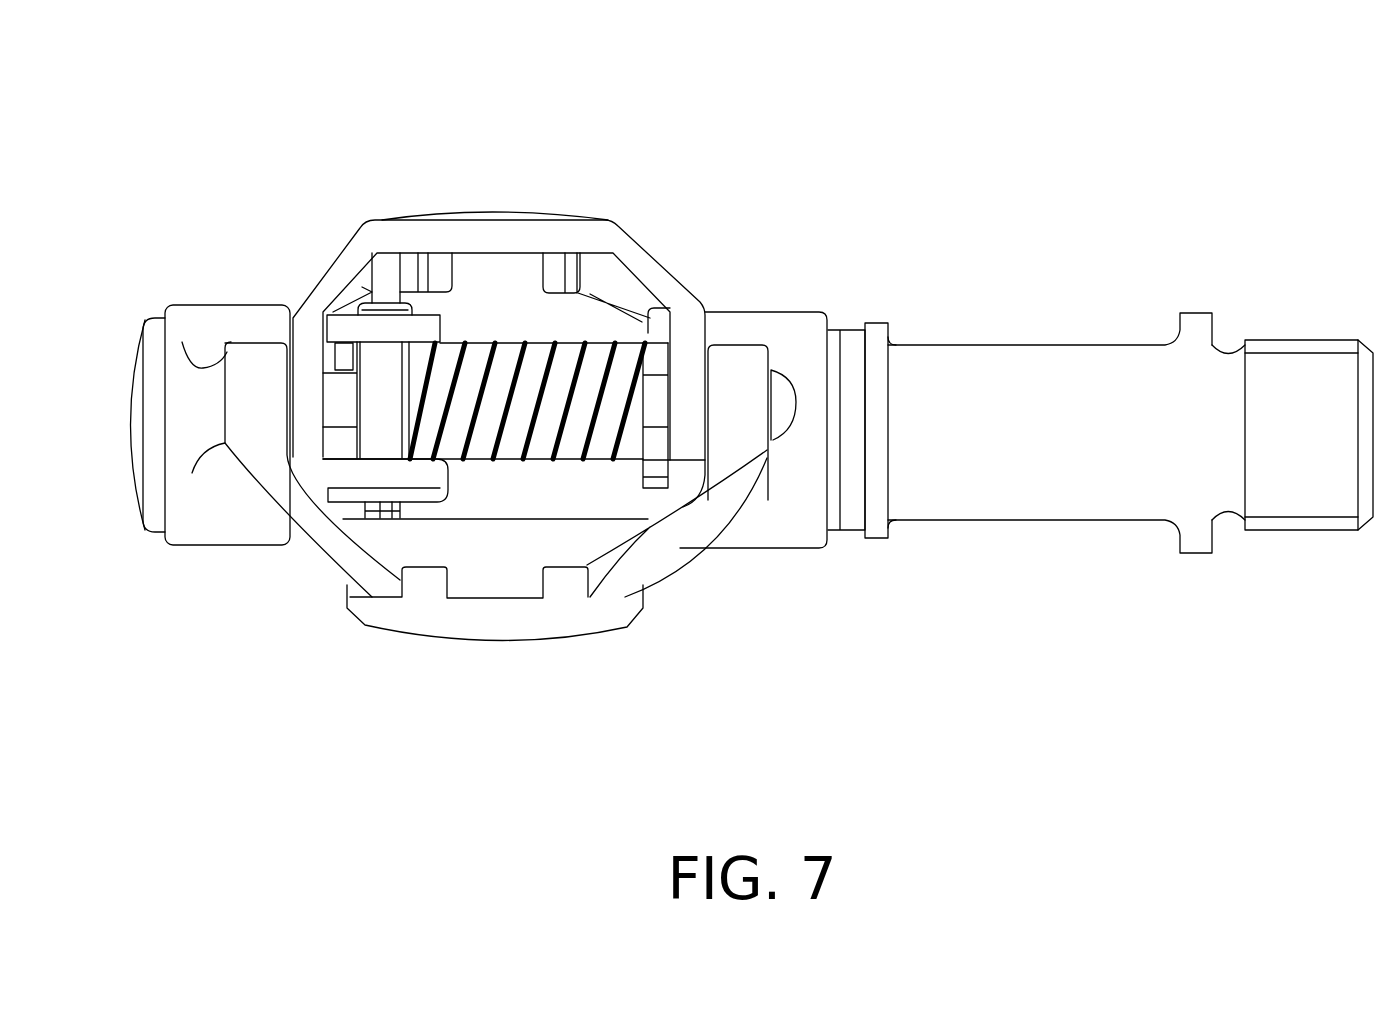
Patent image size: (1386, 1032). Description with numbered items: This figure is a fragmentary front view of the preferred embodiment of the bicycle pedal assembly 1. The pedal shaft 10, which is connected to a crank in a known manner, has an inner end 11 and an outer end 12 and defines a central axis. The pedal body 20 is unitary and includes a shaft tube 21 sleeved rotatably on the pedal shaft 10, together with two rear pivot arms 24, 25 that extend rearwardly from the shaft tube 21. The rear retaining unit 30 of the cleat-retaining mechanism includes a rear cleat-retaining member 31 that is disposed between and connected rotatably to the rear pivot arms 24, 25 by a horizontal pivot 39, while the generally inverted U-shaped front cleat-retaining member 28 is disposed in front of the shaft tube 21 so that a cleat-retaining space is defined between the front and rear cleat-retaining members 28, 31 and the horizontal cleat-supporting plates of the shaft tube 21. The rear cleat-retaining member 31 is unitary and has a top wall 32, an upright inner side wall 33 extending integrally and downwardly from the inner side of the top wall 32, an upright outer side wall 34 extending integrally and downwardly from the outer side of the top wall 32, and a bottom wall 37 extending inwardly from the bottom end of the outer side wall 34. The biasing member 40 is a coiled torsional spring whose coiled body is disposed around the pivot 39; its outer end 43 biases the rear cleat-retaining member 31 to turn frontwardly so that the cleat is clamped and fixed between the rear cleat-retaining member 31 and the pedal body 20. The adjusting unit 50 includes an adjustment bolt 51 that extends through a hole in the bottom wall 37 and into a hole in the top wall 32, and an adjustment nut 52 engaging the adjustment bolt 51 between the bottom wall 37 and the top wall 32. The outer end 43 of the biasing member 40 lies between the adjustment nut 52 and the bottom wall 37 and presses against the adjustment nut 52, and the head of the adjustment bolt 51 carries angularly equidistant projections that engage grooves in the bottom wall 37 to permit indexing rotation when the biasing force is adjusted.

The bicycle pedal assembly 1 is at (1318, 337).
The pedal shaft 10 is at (1113, 365).
The inner end 11 is at (1298, 520).
The outer end 12 is at (1060, 515).
The pedal body 20 is at (800, 312).
The shaft tube 21 is at (819, 550).
The rear pivot arm 24 is at (748, 357).
The rear pivot arm 25 is at (237, 410).
The front cleat-retaining member 28 is at (440, 277).
The rear retaining unit 30 is at (341, 246).
The rear cleat-retaining member 31 is at (650, 243).
The top wall 32 is at (603, 235).
The inner side wall 33 is at (680, 452).
The outer side wall 34 is at (302, 442).
The bottom wall 37 is at (333, 476).
The horizontal pivot 39 is at (787, 403).
The biasing member 40 is at (530, 462).
The outer end 43 is at (347, 360).
The adjusting unit 50 is at (406, 508).
The adjustment bolt 51 is at (368, 410).
The adjustment nut 52 is at (350, 332).